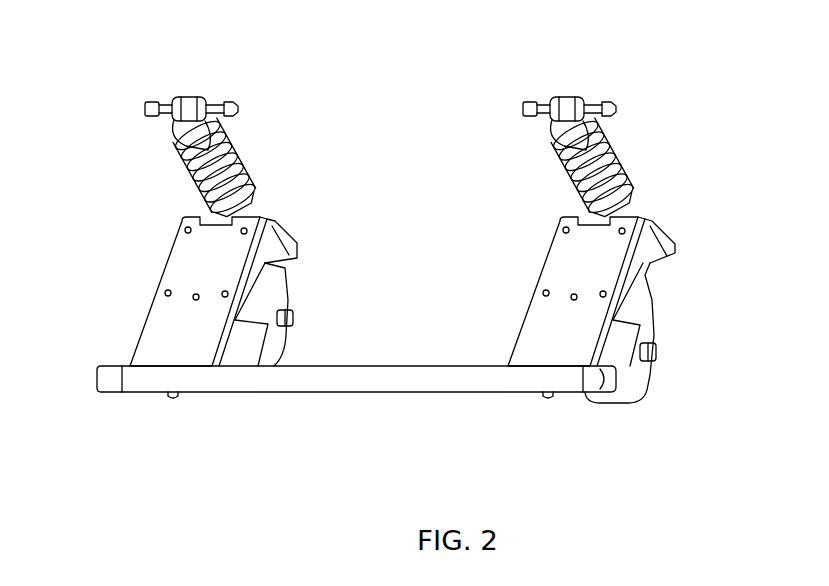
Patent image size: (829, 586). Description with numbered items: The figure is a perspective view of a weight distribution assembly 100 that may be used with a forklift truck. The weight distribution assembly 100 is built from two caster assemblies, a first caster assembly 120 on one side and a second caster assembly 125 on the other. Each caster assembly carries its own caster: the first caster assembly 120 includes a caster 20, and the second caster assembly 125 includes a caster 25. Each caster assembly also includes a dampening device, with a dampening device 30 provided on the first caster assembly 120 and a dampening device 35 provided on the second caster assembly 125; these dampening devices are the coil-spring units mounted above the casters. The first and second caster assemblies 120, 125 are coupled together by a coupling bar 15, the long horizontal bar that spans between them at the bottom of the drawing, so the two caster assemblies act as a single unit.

The weight distribution assembly 100 is at (419, 117).
The coupling bar 15 is at (380, 393).
The caster 20 is at (290, 338).
The caster 25 is at (636, 408).
The dampening device 30 is at (239, 148).
The dampening device 35 is at (623, 168).
The first caster assembly 120 is at (156, 198).
The second caster assembly 125 is at (539, 197).